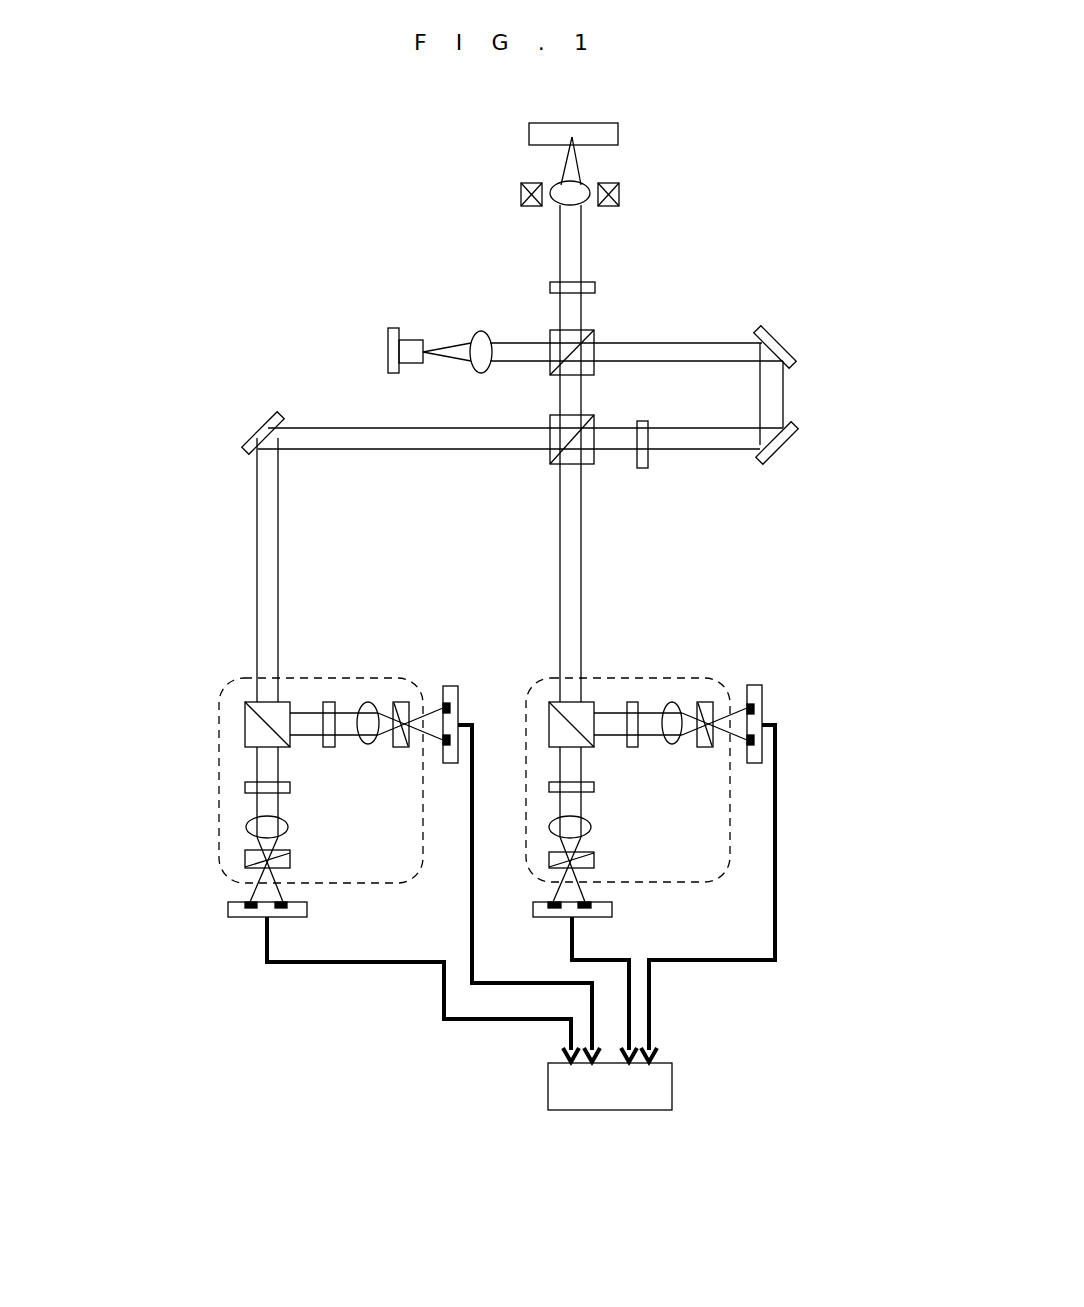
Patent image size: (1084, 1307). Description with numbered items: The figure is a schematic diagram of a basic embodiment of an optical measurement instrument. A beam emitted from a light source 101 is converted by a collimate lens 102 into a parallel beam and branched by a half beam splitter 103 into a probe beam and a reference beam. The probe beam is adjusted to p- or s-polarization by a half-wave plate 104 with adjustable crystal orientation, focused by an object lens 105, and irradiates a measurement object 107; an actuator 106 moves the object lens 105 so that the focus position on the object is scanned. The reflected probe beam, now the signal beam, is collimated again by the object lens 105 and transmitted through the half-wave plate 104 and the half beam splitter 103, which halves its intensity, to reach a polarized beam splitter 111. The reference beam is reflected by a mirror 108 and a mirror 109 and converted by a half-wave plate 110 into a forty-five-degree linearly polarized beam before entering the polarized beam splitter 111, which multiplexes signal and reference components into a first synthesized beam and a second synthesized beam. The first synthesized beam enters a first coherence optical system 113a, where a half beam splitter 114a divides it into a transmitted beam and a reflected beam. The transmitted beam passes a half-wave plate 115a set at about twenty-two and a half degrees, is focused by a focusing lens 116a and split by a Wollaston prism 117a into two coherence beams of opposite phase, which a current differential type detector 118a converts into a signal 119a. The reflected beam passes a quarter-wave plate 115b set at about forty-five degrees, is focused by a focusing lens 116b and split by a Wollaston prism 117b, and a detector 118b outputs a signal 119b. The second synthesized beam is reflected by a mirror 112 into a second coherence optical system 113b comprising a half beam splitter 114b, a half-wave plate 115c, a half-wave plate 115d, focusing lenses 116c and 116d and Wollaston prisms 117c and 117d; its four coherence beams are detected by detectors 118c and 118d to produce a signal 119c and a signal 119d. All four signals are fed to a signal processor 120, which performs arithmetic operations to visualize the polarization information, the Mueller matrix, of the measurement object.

The light source 101 is at (388, 350).
The collimate lens 102 is at (475, 333).
The half beam splitter 103 is at (550, 340).
The λ/2 plate 104 is at (550, 287).
The object lens 105 is at (583, 186).
The actuator 106 is at (619, 190).
The measurement object 107 is at (529, 135).
The mirror 108 is at (790, 335).
The mirror 109 is at (790, 437).
The λ/2 plate 110 is at (650, 456).
The polarized beam splitter 111 is at (553, 462).
The mirror 112 is at (252, 435).
The first coherence optical system 113a is at (730, 808).
The second coherence optical system 113b is at (235, 680).
The half beam splitter 114a is at (549, 718).
The half beam splitter 114b is at (245, 715).
The λ/2 plate 115a is at (594, 787).
The λ/4 plate 115b is at (632, 702).
The λ/2 plate 115c is at (245, 790).
The λ/2 plate 115d is at (329, 702).
The focusing lens 116a is at (590, 827).
The focusing lens 116b is at (672, 703).
The focusing lens 116c is at (248, 830).
The focusing lens 116d is at (370, 746).
The Wollaston prism 117a is at (594, 860).
The Wollaston prism 117b is at (705, 702).
The Wollaston prism 117c is at (245, 873).
The Wollaston prism 117d is at (403, 702).
The current differential type detector 118a is at (612, 907).
The current differential type detector 118b is at (755, 685).
The detector 118c is at (253, 917).
The detector 118d is at (450, 685).
The signal 119a is at (572, 940).
The signal 119b is at (775, 743).
The signal 119c is at (267, 940).
The signal 119d is at (472, 718).
The signal processor 120 is at (608, 1110).